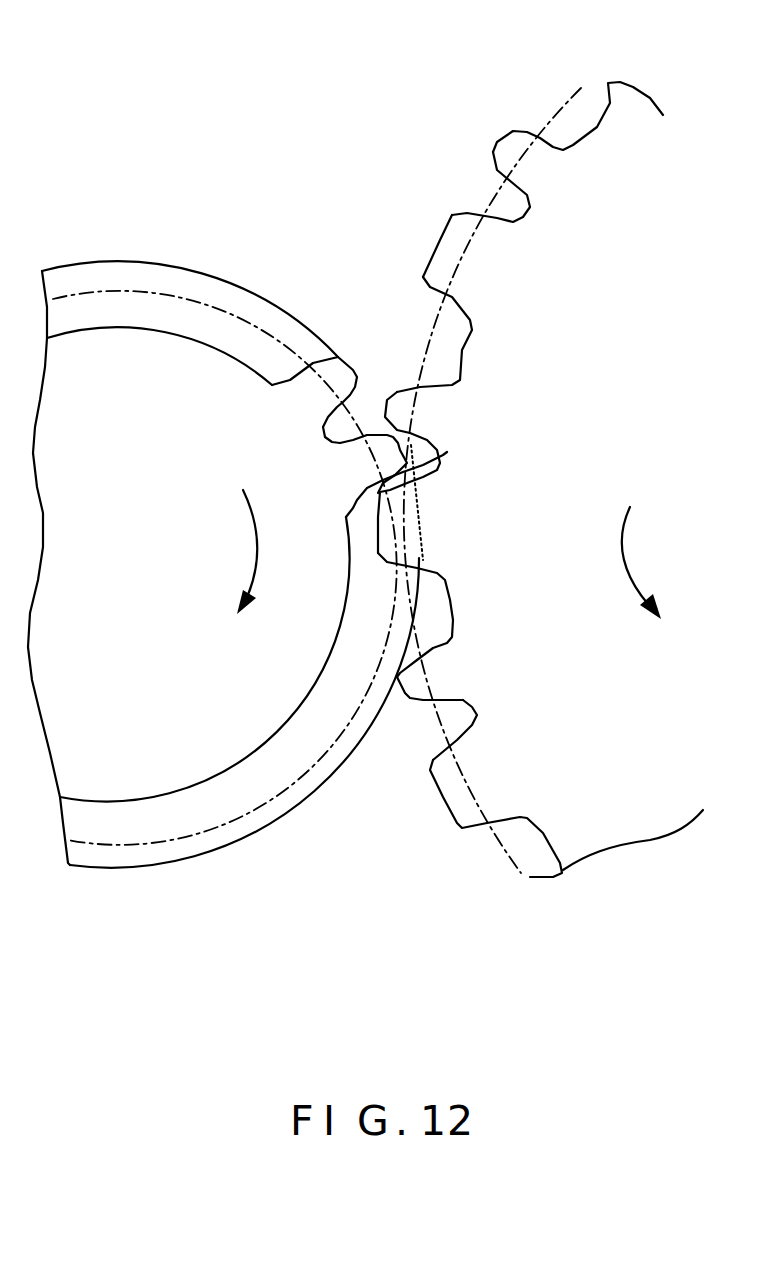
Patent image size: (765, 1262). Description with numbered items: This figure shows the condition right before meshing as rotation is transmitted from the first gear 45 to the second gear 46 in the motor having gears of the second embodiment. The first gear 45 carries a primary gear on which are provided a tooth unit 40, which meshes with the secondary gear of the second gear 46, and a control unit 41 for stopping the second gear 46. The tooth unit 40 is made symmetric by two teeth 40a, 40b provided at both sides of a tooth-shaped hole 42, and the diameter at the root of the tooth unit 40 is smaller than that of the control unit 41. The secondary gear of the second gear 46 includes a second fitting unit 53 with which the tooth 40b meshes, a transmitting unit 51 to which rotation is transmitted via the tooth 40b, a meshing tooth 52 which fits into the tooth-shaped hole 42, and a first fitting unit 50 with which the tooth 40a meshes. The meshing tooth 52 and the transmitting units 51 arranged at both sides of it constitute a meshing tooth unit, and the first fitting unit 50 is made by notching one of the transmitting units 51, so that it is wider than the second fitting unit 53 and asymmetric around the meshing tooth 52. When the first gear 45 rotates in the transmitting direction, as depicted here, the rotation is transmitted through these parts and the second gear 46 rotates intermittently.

The first gear 45 is at (237, 494).
The control unit 41 is at (218, 288).
The tooth unit 40 is at (288, 413).
The tooth 40a is at (340, 372).
The tooth 40b is at (370, 462).
The tooth-shaped hole 42 is at (322, 437).
The second gear 46 is at (540, 447).
The first fitting unit 50 is at (455, 348).
The transmitting unit 51 is at (477, 243).
The meshing tooth 52 is at (430, 410).
The second fitting unit 53 is at (427, 458).